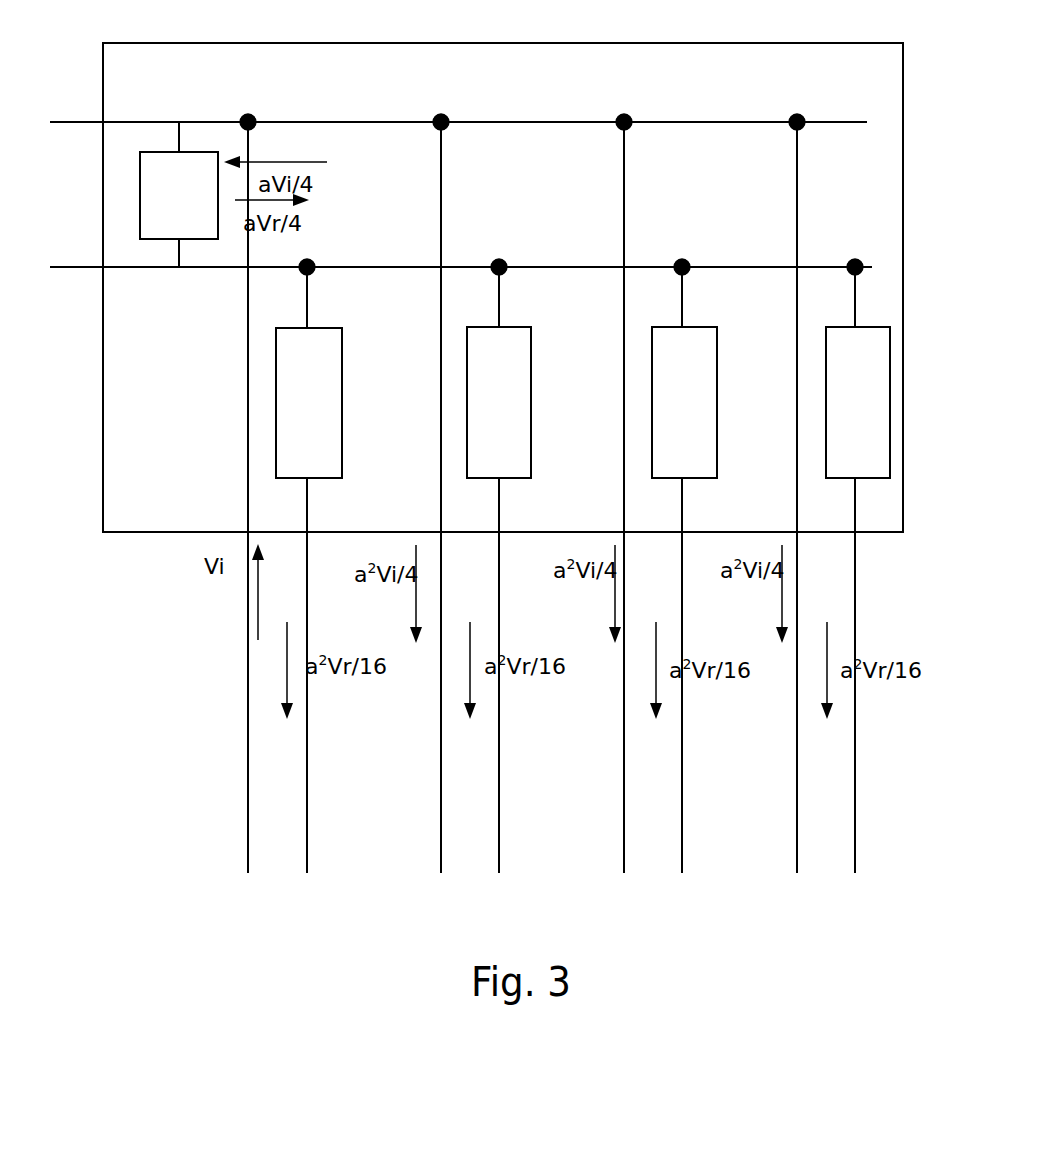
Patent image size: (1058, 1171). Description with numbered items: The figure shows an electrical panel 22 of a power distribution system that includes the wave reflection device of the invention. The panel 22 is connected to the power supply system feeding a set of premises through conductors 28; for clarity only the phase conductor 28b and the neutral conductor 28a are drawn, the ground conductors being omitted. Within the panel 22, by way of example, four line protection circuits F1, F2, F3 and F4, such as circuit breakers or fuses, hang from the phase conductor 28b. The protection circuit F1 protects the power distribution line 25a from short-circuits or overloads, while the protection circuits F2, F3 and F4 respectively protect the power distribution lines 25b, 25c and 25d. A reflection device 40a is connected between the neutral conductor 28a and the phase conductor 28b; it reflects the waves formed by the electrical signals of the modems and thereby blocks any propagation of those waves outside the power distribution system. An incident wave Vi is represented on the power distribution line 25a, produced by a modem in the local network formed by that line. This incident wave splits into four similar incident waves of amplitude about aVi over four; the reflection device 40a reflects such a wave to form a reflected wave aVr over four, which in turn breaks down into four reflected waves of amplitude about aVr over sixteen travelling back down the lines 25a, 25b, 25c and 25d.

The electrical panel 22 is at (325, 63).
The conductors 28 is at (160, 174).
The neutral conductor 28a is at (100, 122).
The phase conductor 28b is at (90, 269).
The reflection device 40a is at (170, 159).
The protection circuit F1 is at (330, 372).
The protection circuit F2 is at (521, 372).
The protection circuit F3 is at (705, 372).
The protection circuit F4 is at (884, 372).
The power distribution line 25a is at (277, 500).
The power distribution line 25b is at (470, 500).
The power distribution line 25c is at (653, 500).
The power distribution line 25d is at (826, 500).